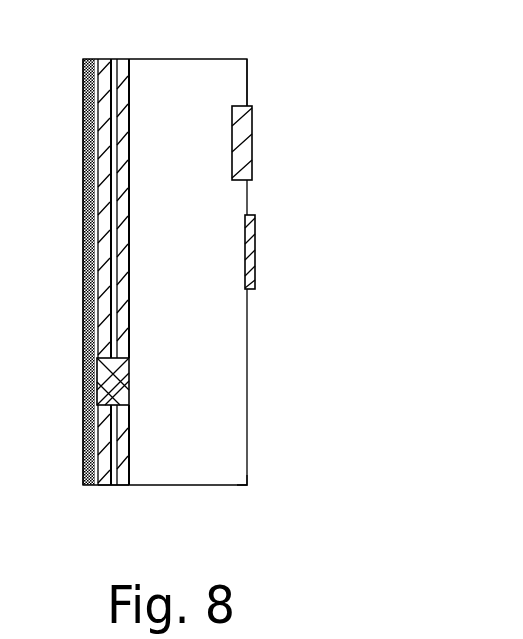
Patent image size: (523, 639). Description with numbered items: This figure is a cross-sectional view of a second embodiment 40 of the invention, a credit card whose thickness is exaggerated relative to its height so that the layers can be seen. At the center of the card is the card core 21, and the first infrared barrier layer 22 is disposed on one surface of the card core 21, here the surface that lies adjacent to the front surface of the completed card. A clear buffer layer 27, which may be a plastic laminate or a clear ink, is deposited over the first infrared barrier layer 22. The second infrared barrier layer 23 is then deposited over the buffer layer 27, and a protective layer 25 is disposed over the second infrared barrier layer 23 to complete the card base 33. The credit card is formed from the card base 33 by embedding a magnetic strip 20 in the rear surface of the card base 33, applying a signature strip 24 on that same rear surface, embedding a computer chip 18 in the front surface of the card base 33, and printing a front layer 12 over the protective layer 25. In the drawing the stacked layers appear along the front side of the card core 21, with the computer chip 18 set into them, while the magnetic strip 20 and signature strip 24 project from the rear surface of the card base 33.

The front layer 12 is at (83, 263).
The computer chip 18 is at (100, 372).
The magnetic strip 20 is at (252, 142).
The card core 21 is at (168, 483).
The first infrared barrier layer 22 is at (123, 59).
The second infrared barrier layer 23 is at (108, 485).
The signature strip 24 is at (255, 262).
The protective layer 25 is at (102, 485).
The clear buffer layer 27 is at (114, 59).
The card base 33 is at (237, 487).
The second embodiment 40 is at (248, 82).